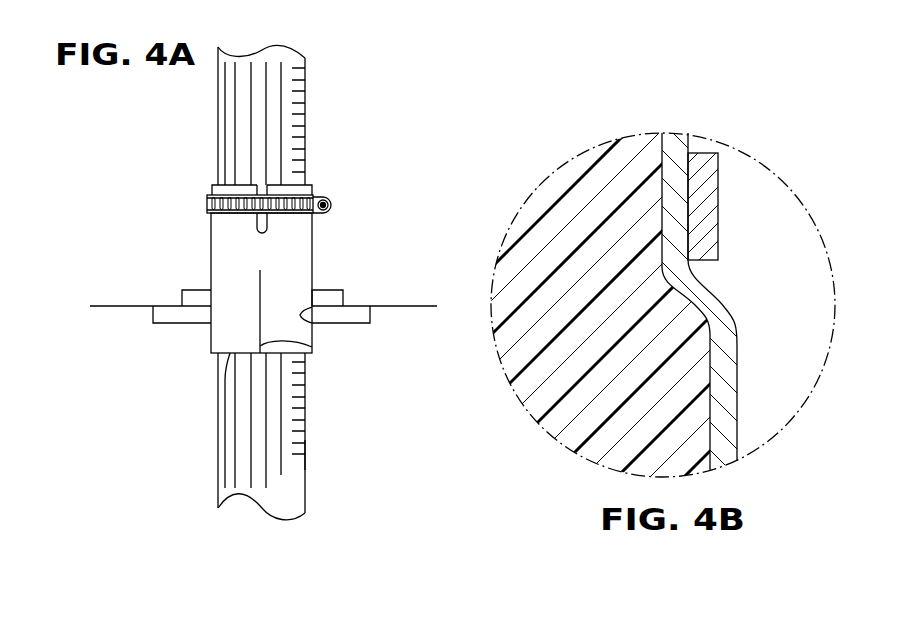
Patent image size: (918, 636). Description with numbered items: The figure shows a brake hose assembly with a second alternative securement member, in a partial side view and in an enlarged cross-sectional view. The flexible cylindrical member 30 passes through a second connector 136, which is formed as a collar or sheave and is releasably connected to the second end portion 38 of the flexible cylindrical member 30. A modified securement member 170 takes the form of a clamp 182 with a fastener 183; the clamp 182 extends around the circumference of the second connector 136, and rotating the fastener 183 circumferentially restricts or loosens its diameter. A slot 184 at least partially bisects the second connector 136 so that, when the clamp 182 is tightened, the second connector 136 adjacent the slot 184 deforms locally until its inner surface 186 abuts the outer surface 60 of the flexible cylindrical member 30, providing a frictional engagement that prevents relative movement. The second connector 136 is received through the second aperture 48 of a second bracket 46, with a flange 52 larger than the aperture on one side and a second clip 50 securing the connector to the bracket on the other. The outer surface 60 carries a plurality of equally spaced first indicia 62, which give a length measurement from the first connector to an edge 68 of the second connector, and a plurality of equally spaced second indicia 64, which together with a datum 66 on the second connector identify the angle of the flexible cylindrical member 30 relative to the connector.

In FIG. 4A, the flexible cylindrical member 30 is at (268, 45).
In FIG. 4B, the flexible cylindrical member 30 is at (572, 167).
In FIG. 4A, the second end portion 38 is at (212, 148).
In FIG. 4A, the second connector 136 is at (188, 238).
In FIG. 4A, the modified securement member 170 is at (338, 178).
In FIG. 4A, the clamp 182 is at (313, 214).
In FIG. 4B, the clamp 182 is at (719, 186).
In FIG. 4A, the fastener 183 is at (332, 204).
In FIG. 4A, the slot 184 is at (268, 232).
In FIG. 4A, the second bracket 46 is at (403, 306).
In FIG. 4A, the flange 52 is at (196, 290).
In FIG. 4A, the second clip 50 is at (153, 311).
In FIG. 4A, the second aperture 48 is at (312, 320).
In FIG. 4A, the datum 66 is at (302, 347).
In FIG. 4A, the outer surface 60 is at (295, 510).
In FIG. 4A, the edge 68 is at (230, 356).
In FIG. 4A, the plurality of equally spaced first indicia 62 is at (295, 450).
In FIG. 4A, the plurality of equally spaced second indicia 64 is at (281, 475).
In FIG. 4B, the inner surface 186 is at (663, 134).